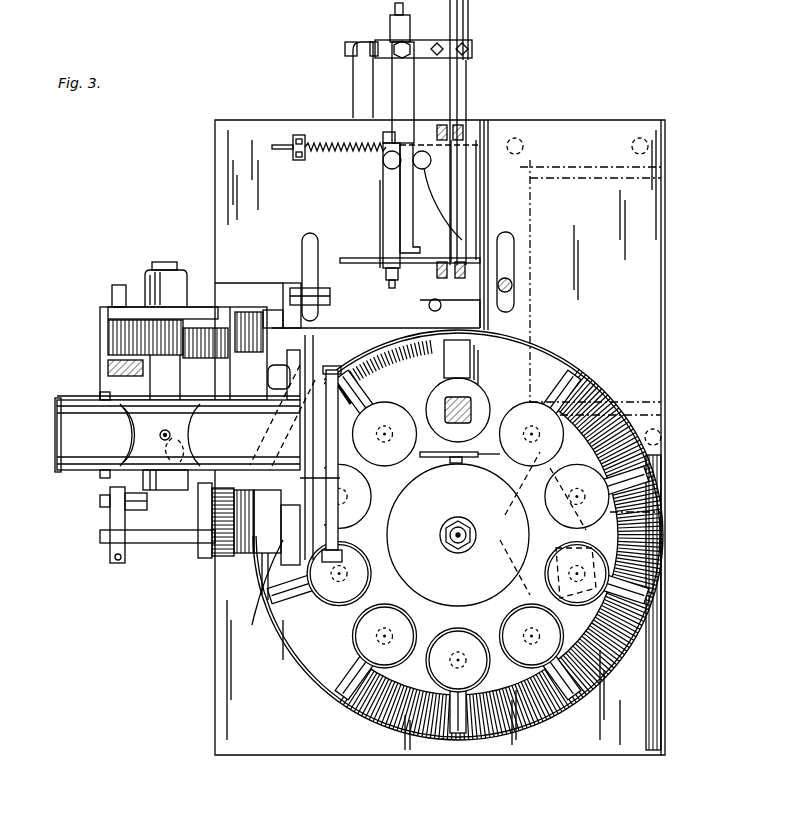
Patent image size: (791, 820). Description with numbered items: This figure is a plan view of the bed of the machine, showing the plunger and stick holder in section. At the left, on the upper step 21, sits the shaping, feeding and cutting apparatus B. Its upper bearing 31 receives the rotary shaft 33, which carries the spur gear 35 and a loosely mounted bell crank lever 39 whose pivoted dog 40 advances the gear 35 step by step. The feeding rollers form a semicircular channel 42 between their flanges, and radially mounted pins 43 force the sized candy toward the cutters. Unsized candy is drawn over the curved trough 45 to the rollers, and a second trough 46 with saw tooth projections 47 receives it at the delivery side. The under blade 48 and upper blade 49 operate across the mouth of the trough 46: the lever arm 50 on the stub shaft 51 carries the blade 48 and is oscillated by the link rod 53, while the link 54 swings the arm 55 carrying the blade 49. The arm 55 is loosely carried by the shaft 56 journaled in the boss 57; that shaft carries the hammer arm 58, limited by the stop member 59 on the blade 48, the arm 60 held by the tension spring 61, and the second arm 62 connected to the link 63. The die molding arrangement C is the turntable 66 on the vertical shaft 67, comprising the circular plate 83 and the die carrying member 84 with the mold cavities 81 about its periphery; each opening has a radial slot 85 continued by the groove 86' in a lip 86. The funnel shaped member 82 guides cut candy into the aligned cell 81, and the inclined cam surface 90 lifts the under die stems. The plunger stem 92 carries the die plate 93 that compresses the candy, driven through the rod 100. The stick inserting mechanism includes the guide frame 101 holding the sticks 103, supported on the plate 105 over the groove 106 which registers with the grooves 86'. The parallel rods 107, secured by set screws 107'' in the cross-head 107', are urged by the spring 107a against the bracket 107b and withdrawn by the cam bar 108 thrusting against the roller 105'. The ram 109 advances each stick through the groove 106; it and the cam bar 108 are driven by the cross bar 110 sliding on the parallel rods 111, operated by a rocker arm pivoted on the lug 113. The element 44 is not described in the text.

The upper step 21 is at (216, 217).
The upper bearing 31 is at (185, 380).
The upper rotary shaft 33 is at (163, 264).
The spur gear 35 is at (108, 340).
The bell crank lever 39 is at (180, 292).
The pivoted dog 40 is at (215, 332).
The semicircular channel section 42 is at (132, 440).
The radially mounted pins 43 is at (176, 438).
The worm 44 is at (110, 397).
The curved trough 45 is at (60, 461).
The second trough 46 is at (282, 447).
The saw tooth projections 47 is at (172, 446).
The under blade 48 is at (304, 380).
The upper blade 49 is at (305, 490).
The lever arm 50 is at (283, 310).
The stub shaft 51 is at (270, 378).
The link rod 53 is at (308, 290).
The link 54 is at (316, 256).
The arm 55 is at (272, 586).
The shaft 56 is at (170, 546).
The boss 57 is at (225, 500).
The hammer arm 58 is at (335, 505).
The stop member 59 is at (353, 392).
The arm 60 is at (200, 520).
The tension spring 61 is at (215, 495).
The second arm 62 is at (110, 515).
The link 63 is at (140, 506).
The turntable 66 is at (600, 390).
The vertical shaft 67 is at (458, 535).
The mold cavities 81 is at (547, 482).
The funnel shaped member 82 is at (420, 462).
The circular plate 83 is at (620, 640).
The die carrying member 84 is at (578, 630).
The radial slot 85 is at (545, 535).
The lip 86 is at (483, 531).
The groove 86' is at (472, 541).
The inclined cam surface 90 is at (660, 512).
The plunger stem 92 is at (448, 400).
The die plate 93 is at (472, 392).
The rod 100 is at (512, 285).
The guide frame 101 is at (440, 126).
The sticks 103 is at (472, 332).
The plate 105 is at (498, 225).
The roller 105' is at (498, 200).
The groove 106 is at (458, 172).
The parallel rods 107 is at (391, 164).
The spring 107a is at (318, 146).
The bracket 107b is at (292, 152).
The cross-head 107' is at (372, 224).
The set screws 107'' is at (369, 217).
The cam bar 108 is at (385, 166).
The plunger or ram 109 is at (458, 95).
The cross bar 110 is at (421, 46).
The parallel rods 111 is at (393, 8).
The lug 113 is at (353, 95).
The shaping, feeding and cutting apparatus B is at (100, 489).
The die molding arrangement C is at (458, 517).